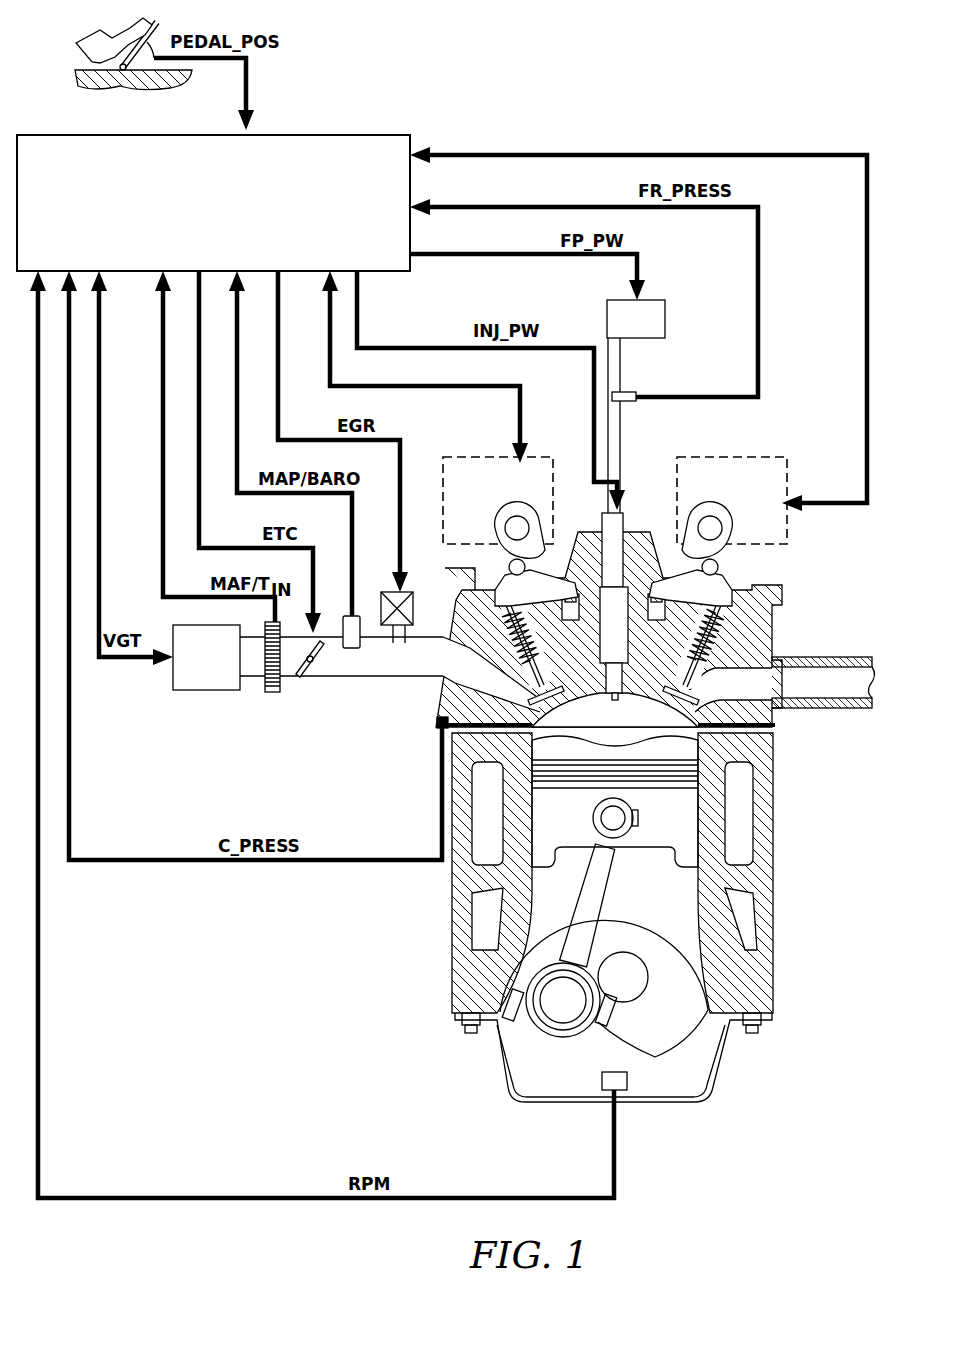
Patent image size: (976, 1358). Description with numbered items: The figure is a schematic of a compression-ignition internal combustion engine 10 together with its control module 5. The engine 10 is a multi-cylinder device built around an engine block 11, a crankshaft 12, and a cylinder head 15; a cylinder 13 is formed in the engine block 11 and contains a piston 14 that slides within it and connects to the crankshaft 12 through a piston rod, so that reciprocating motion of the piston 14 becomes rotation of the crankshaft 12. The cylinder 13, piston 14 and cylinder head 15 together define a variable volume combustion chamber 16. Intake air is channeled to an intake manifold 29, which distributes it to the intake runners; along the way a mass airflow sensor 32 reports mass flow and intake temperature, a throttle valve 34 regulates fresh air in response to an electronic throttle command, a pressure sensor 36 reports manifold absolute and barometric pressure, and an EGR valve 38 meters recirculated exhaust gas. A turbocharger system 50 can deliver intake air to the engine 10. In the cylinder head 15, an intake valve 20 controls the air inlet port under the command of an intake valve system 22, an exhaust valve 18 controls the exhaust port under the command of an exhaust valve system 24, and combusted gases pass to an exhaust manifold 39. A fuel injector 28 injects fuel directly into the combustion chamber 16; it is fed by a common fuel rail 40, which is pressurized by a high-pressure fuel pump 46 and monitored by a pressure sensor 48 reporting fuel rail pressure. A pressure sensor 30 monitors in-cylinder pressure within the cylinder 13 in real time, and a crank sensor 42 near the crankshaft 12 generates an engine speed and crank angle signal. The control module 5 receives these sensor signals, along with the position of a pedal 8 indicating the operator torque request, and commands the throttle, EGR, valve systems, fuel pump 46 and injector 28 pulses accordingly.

The control module 5 is at (365, 128).
The pedal 8 is at (123, 75).
The internal combustion engine 10 is at (709, 1138).
The engine block 11 is at (755, 873).
The crankshaft 12 is at (670, 1033).
The cylinder 13 is at (704, 748).
The piston 14 is at (675, 829).
The cylinder head 15 is at (772, 598).
The combustion chamber 16 is at (590, 734).
The exhaust valve 18 is at (690, 695).
The intake valve 20 is at (535, 692).
The intake valve system 22 is at (540, 462).
The exhaust valve system 24 is at (778, 520).
The fuel injector 28 is at (618, 518).
The intake manifold 29 is at (430, 650).
The pressure sensor 30 is at (437, 722).
The mass airflow sensor 32 is at (272, 692).
The throttle valve 34 is at (308, 665).
The pressure sensor 36 is at (351, 648).
The EGR valve 38 is at (393, 628).
The exhaust manifold 39 is at (762, 677).
The fuel rail 40 is at (616, 372).
The crank sensor 42 is at (605, 1085).
The fuel pump 46 is at (662, 322).
The pressure sensor 48 is at (636, 397).
The turbocharger system 50 is at (185, 688).